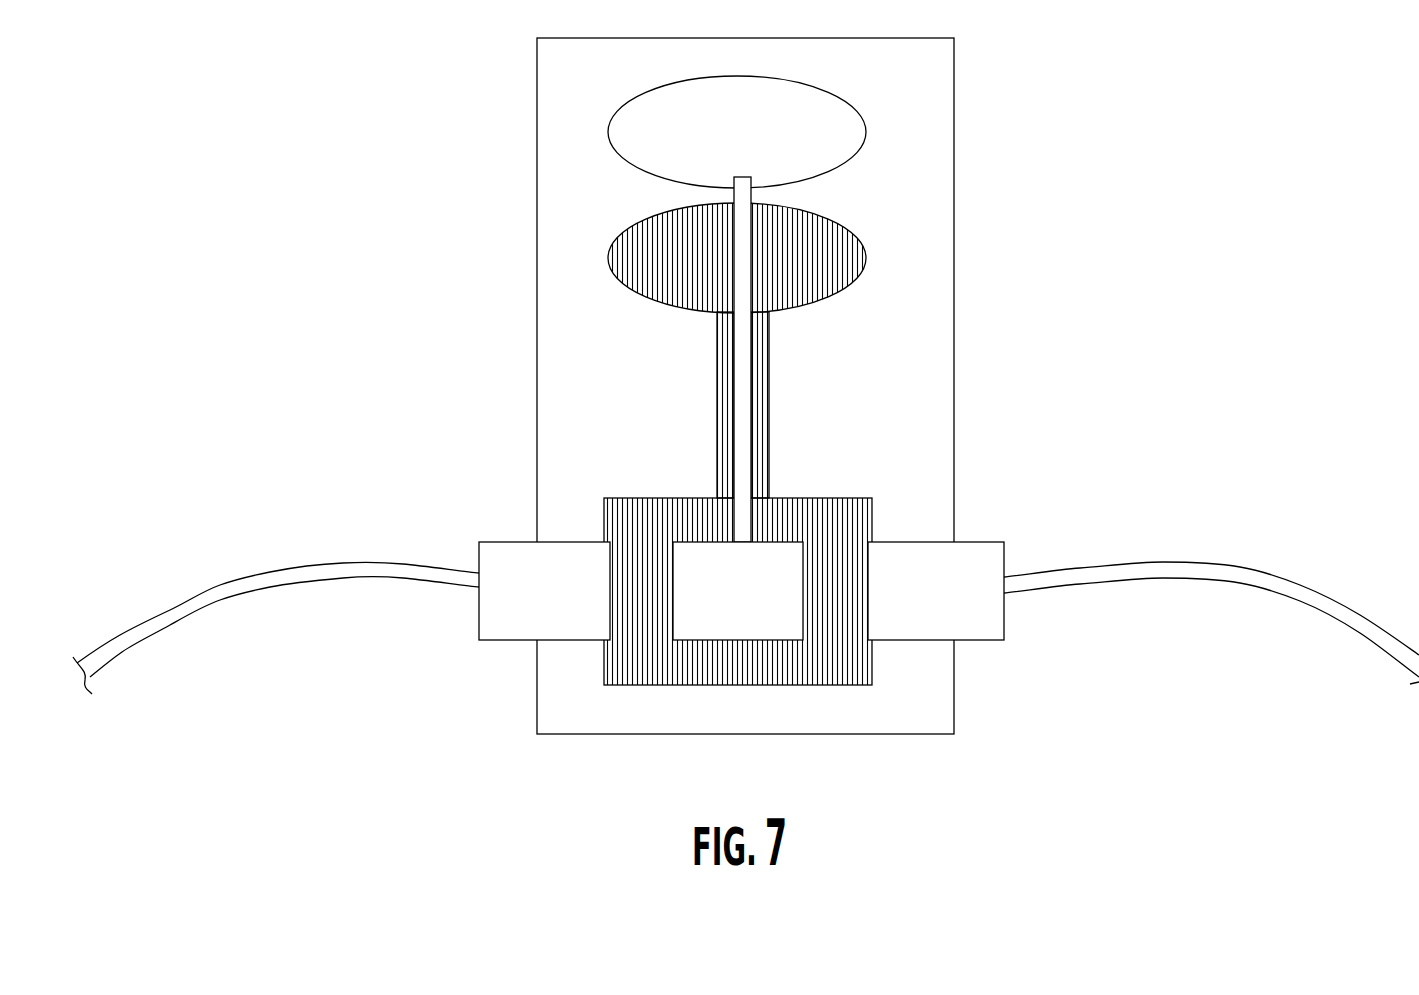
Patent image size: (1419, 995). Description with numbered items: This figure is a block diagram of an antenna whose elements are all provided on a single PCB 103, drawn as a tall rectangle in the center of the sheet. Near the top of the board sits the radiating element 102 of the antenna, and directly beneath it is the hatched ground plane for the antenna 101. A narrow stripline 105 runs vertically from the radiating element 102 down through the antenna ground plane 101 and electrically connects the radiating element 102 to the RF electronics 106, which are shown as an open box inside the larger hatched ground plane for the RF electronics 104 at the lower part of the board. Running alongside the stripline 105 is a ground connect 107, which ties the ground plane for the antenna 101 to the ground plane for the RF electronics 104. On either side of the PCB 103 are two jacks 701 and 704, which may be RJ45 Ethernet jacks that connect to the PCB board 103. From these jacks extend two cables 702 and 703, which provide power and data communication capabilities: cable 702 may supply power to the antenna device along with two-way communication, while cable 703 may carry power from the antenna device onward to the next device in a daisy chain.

The ground plane for the antenna 101 is at (597, 260).
The radiating element 102 is at (853, 102).
The PCB 103 is at (955, 248).
The ground plane for the RF electronics 104 is at (659, 687).
The stripline 105 is at (752, 457).
The RF electronics 106 is at (773, 642).
The ground connect 107 is at (717, 455).
The jack 701 is at (968, 537).
The cable 702 is at (1163, 562).
The cable 703 is at (277, 570).
The jack 704 is at (517, 641).